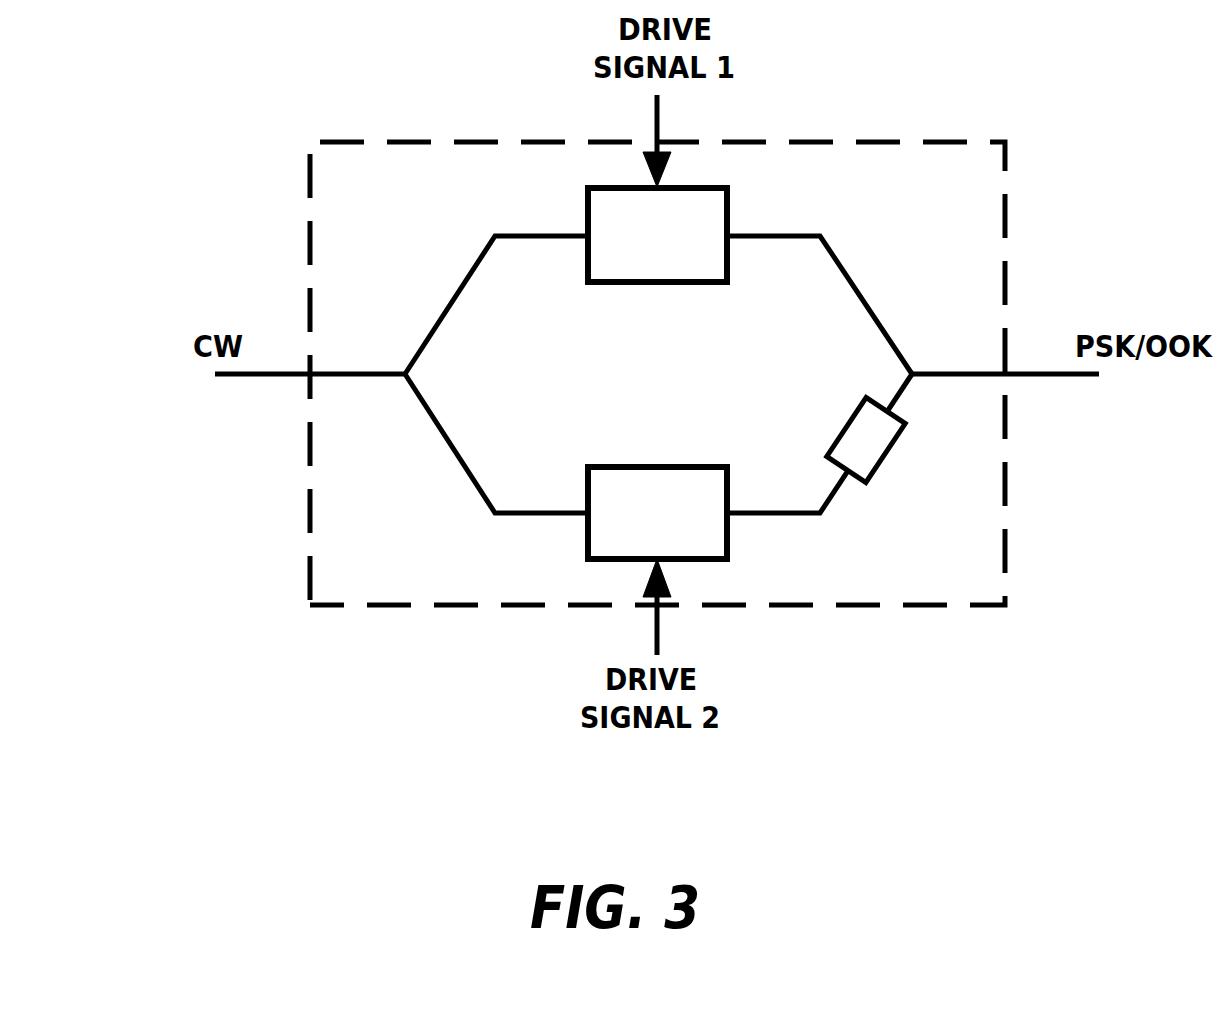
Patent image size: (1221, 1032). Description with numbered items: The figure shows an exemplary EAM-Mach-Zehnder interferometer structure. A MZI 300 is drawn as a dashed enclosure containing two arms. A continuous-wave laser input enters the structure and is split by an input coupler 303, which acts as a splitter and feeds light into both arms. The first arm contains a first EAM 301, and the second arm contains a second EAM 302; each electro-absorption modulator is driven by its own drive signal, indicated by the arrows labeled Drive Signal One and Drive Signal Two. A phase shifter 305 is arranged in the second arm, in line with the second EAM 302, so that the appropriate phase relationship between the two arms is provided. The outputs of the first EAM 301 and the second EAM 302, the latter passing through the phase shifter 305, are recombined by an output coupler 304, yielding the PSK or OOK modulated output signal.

The MZI 300 is at (933, 142).
The first EAM 301 is at (586, 207).
The second EAM 302 is at (587, 475).
The input coupler 303 is at (405, 366).
The output coupler 304 is at (918, 372).
The phase shifter 305 is at (842, 421).